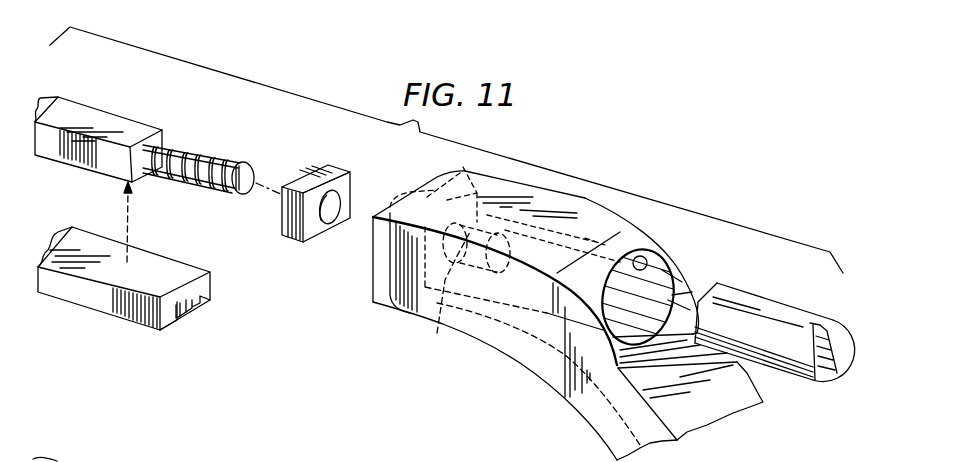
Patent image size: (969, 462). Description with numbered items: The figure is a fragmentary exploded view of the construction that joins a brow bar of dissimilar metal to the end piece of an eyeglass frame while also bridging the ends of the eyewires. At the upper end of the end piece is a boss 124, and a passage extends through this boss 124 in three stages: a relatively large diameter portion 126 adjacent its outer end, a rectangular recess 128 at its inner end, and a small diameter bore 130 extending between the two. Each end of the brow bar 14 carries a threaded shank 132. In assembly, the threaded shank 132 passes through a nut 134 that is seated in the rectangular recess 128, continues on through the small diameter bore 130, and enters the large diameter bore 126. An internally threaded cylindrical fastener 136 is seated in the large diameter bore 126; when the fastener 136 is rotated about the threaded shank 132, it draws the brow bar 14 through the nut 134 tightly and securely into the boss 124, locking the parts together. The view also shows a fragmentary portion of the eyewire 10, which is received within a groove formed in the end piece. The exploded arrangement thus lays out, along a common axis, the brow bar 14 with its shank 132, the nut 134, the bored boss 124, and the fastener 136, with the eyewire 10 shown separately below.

The eyewire 10 is at (128, 315).
The brow bar 14 is at (102, 106).
The boss 124 is at (607, 210).
The large diameter portion 126 is at (647, 265).
The rectangular recess 128 is at (462, 165).
The small diameter bore 130 is at (437, 333).
The threaded shank 132 is at (215, 159).
The nut 134 is at (303, 176).
The internally threaded cylindrical fastener 136 is at (752, 317).